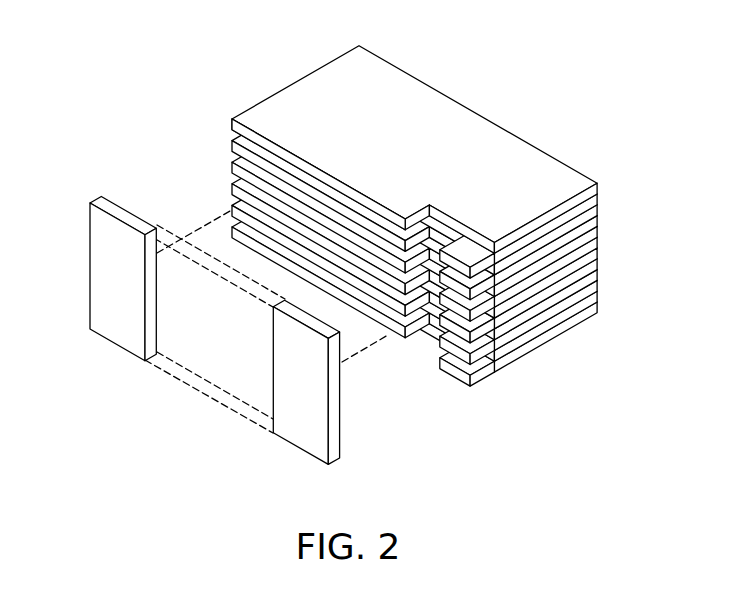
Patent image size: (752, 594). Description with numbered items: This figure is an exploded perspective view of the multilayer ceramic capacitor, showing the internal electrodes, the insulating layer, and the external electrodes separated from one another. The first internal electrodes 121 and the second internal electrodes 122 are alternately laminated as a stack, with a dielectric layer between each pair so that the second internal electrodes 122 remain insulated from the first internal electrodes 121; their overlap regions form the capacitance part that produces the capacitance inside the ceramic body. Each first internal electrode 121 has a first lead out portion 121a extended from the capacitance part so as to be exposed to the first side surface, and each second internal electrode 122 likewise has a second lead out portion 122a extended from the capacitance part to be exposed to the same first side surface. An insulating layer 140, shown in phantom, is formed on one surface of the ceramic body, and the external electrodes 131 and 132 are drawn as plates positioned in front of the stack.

The first internal electrode 121 is at (418, 115).
The first lead out portion 121a is at (257, 122).
The second internal electrode 122 is at (598, 198).
The second lead out portion 122a is at (464, 250).
The external electrode 131 is at (120, 307).
The external electrode 132 is at (303, 413).
The insulating layer 140 is at (200, 390).